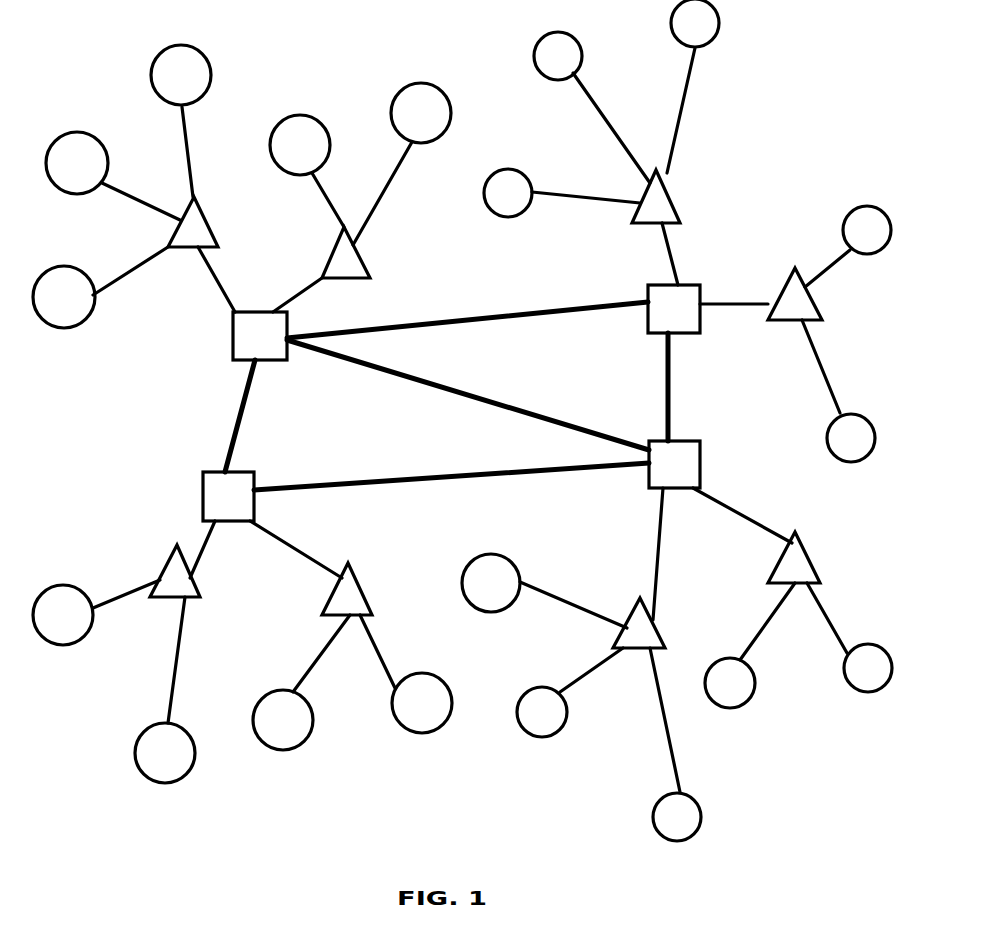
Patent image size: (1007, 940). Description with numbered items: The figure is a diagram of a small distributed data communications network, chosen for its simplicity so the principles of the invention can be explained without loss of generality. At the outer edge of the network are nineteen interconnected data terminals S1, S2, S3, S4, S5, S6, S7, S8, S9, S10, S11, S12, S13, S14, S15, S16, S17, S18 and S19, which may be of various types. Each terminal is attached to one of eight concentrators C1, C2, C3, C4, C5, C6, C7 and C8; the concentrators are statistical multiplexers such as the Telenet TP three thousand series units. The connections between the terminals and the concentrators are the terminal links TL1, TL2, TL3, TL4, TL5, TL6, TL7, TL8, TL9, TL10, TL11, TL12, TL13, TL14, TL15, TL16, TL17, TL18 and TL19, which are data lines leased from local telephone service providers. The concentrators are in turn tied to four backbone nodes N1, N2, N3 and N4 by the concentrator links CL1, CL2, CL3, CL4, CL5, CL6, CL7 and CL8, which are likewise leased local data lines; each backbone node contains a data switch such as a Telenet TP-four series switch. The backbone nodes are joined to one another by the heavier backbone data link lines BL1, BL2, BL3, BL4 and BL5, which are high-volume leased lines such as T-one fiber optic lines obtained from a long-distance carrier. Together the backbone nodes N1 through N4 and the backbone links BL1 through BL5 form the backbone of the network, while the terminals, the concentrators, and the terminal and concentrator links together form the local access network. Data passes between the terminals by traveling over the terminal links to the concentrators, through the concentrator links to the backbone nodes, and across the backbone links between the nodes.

The data terminal S1 is at (508, 193).
The data terminal S2 is at (558, 56).
The data terminal S3 is at (695, 23).
The data terminal S4 is at (867, 230).
The data terminal S5 is at (851, 438).
The data terminal S6 is at (868, 668).
The data terminal S7 is at (730, 683).
The data terminal S8 is at (677, 817).
The data terminal S9 is at (542, 712).
The data terminal S10 is at (491, 583).
The data terminal S11 is at (422, 703).
The data terminal S12 is at (283, 720).
The data terminal S13 is at (165, 753).
The data terminal S14 is at (63, 615).
The data terminal S15 is at (64, 297).
The data terminal S16 is at (77, 163).
The data terminal S17 is at (181, 75).
The data terminal S18 is at (300, 145).
The data terminal S19 is at (421, 113).
The concentrator C1 is at (656, 196).
The concentrator C2 is at (795, 294).
The concentrator C3 is at (794, 557).
The concentrator C4 is at (639, 623).
The concentrator C5 is at (347, 589).
The concentrator C6 is at (175, 571).
The concentrator C7 is at (193, 222).
The concentrator C8 is at (346, 252).
The backbone node N1 is at (674, 309).
The backbone node N2 is at (674, 464).
The backbone node N3 is at (228, 496).
The backbone node N4 is at (260, 336).
The terminal link TL1 is at (586, 215).
The terminal link TL2 is at (599, 128).
The terminal link TL3 is at (704, 110).
The terminal link TL4 is at (820, 251).
The terminal link TL5 is at (807, 366).
The terminal link TL6 is at (835, 618).
The terminal link TL7 is at (755, 621).
The terminal link TL8 is at (649, 720).
The terminal link TL9 is at (578, 670).
The terminal link TL10 is at (573, 594).
The terminal link TL11 is at (390, 651).
The terminal link TL12 is at (303, 653).
The terminal link TL13 is at (150, 660).
The terminal link TL14 is at (121, 584).
The terminal link TL15 is at (125, 270).
The terminal link TL16 is at (141, 190).
The terminal link TL17 is at (213, 152).
The terminal link TL18 is at (306, 200).
The terminal link TL19 is at (395, 193).
The concentrator link CL1 is at (649, 254).
The concentrator link CL2 is at (734, 285).
The concentrator link CL3 is at (742, 515).
The concentrator link CL4 is at (639, 554).
The concentrator link CL5 is at (296, 554).
The concentrator link CL6 is at (184, 544).
The concentrator link CL7 is at (205, 279).
The concentrator link CL8 is at (291, 288).
The backbone data link line BL1 is at (642, 387).
The backbone data link line BL2 is at (451, 472).
The backbone data link line BL3 is at (222, 416).
The backbone data link line BL4 is at (468, 395).
The backbone data link line BL5 is at (467, 330).